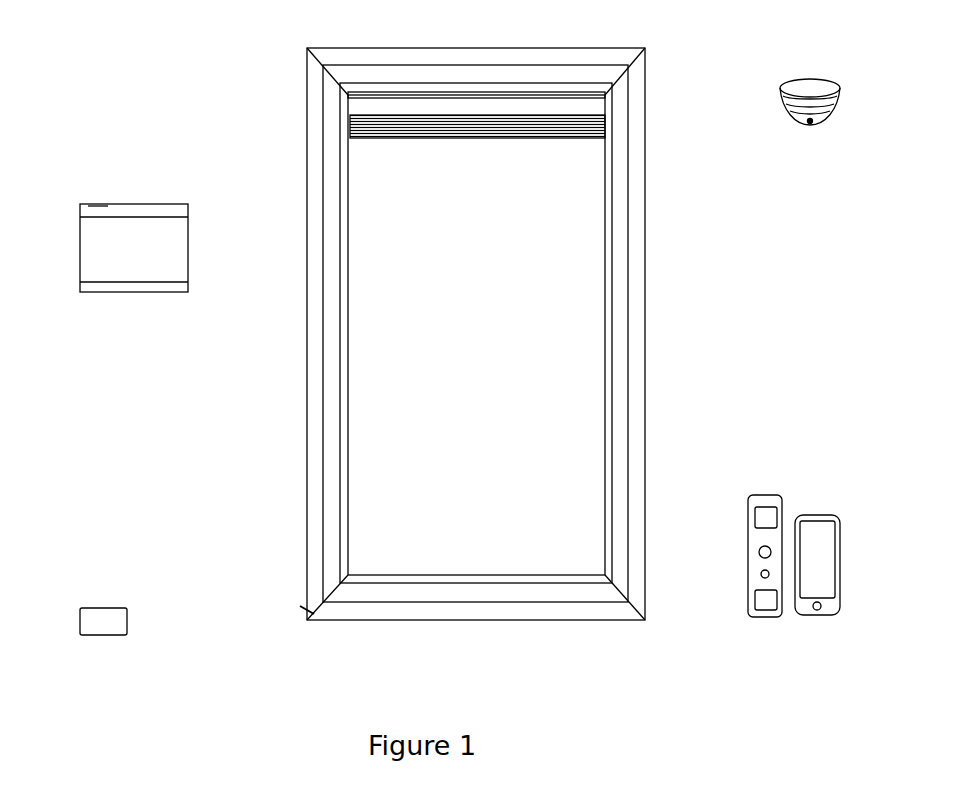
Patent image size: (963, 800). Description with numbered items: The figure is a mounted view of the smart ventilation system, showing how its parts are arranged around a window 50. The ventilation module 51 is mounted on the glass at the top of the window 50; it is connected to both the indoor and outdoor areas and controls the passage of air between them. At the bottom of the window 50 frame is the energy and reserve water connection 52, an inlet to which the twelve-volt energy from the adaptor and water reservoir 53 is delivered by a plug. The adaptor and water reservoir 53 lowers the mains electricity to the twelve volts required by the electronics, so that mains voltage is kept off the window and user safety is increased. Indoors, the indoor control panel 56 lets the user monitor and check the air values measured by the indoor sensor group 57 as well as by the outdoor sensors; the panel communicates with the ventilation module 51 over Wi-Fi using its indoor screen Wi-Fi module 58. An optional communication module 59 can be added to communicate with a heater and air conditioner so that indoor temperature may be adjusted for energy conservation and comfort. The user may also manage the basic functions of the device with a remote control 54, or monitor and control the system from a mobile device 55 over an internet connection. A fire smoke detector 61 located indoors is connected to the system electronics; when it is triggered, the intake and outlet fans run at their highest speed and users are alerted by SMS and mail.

The window 50 is at (647, 318).
The ventilation module 51 is at (605, 112).
The energy and reserve water connection 52 is at (307, 608).
The adaptor and water reservoir 53 is at (107, 609).
The remote control 54 is at (750, 492).
The mobile device 55 is at (808, 512).
The indoor control panel 56 is at (92, 227).
The indoor sensor group 57 is at (92, 292).
The indoor screen Wi-Fi module 58 is at (112, 210).
The communication module 59 is at (98, 212).
The fire smoke detector 61 is at (826, 127).